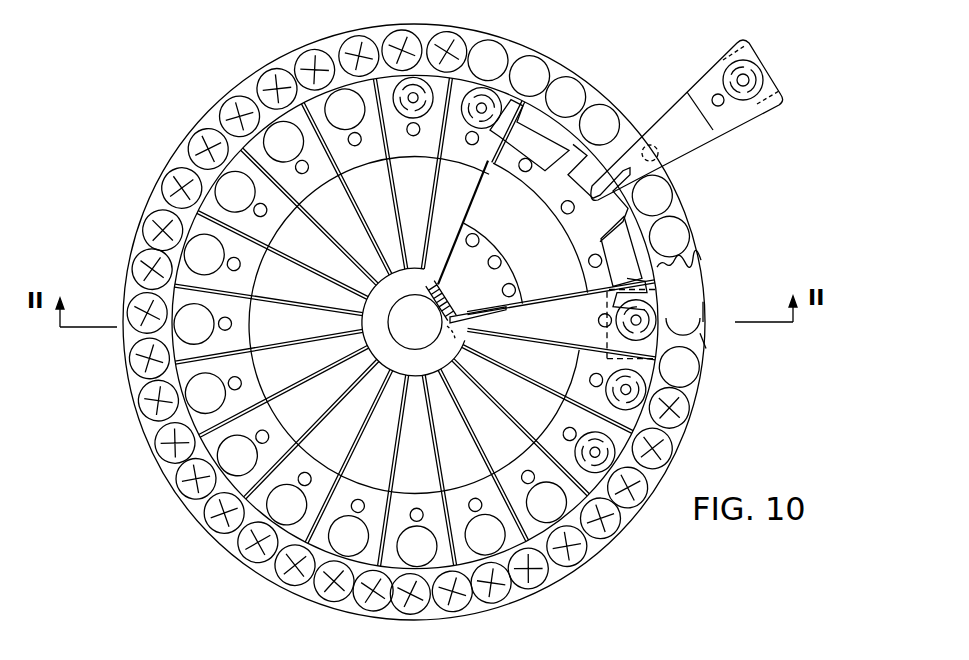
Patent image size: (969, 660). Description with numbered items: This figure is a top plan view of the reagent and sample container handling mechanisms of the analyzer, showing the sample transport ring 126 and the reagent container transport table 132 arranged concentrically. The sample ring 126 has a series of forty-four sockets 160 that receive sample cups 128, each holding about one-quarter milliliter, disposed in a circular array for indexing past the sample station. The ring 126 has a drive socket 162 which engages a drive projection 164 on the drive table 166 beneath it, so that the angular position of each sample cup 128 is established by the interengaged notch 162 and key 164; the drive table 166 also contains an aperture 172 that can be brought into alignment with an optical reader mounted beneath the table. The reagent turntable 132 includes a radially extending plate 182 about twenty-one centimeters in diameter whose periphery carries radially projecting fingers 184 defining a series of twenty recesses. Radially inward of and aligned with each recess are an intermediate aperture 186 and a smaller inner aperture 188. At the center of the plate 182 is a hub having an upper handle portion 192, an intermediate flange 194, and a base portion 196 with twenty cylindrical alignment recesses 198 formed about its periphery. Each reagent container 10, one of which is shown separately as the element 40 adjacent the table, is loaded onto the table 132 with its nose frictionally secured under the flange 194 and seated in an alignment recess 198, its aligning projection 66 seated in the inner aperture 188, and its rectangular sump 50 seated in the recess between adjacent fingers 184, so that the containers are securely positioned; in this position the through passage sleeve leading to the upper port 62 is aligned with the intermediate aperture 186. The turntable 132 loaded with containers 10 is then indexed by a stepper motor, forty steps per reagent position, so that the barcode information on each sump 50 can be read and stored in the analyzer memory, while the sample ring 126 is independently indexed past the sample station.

The reagent container 10 is at (465, 195).
The key element 40 is at (763, 70).
The sump 50 is at (718, 67).
The port 62 is at (723, 106).
The container locating projection 66 is at (667, 152).
The transport ring 126 is at (681, 211).
The sample cup 128 is at (497, 54).
The transport table 132 is at (642, 263).
The socket 160 is at (533, 67).
The drive socket 162 is at (705, 338).
The drive projection 164 is at (707, 308).
The drive table 166 is at (700, 277).
The aperture 172 is at (652, 310).
The plate 182 is at (567, 281).
The finger 184 is at (572, 150).
The aperture 186 is at (561, 212).
The aperture 188 is at (501, 262).
The handle portion 192 is at (426, 327).
The flange 194 is at (433, 375).
The base portion 196 is at (466, 321).
The alignment recess 198 is at (456, 294).